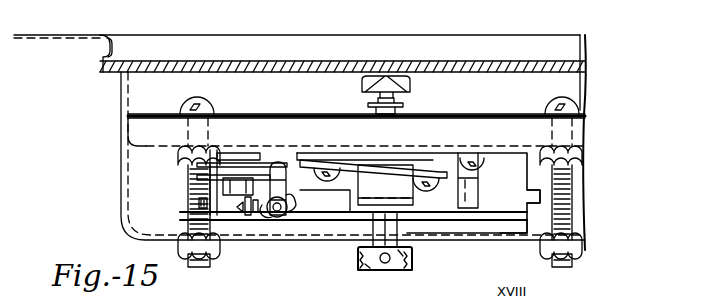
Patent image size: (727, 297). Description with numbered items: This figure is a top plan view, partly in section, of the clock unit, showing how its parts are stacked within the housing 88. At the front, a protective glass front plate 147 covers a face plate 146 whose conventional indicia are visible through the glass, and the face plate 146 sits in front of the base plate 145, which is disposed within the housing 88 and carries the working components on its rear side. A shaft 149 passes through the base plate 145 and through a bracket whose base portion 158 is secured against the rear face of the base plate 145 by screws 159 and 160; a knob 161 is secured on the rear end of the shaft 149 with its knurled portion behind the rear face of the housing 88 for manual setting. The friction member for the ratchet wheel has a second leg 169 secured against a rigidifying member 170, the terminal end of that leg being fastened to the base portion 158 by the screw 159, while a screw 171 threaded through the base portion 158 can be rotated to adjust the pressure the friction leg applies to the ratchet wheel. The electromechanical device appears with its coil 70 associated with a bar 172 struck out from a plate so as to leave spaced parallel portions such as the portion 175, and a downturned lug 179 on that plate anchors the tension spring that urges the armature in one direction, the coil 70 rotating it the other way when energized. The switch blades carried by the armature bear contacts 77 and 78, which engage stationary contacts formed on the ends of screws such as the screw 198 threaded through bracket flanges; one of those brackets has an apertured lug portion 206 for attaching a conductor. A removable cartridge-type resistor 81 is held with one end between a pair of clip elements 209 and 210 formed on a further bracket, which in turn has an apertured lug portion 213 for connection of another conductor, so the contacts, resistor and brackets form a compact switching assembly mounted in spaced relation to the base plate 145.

The protective glass front plate 147 is at (525, 60).
The face plate 146 is at (520, 114).
The base plate 145 is at (137, 156).
The base portion of bracket 158 is at (492, 148).
The housing 88 is at (121, 192).
The second leg 169 is at (378, 154).
The rigidifying member 170 is at (356, 155).
The screw 159 is at (322, 180).
The screw 171 is at (420, 186).
The screw 160 is at (484, 167).
The bar 172 is at (478, 194).
The coil 70 is at (422, 220).
The knob 161 is at (408, 268).
The shaft 149 is at (366, 224).
The parallel portion of plate 175 is at (514, 228).
The downturned lug 179 is at (537, 195).
The lug portion 213 is at (196, 170).
The lug portion 206 is at (198, 180).
The screw 198 is at (198, 206).
The contact 77 is at (239, 212).
The contact 78 is at (254, 216).
The resistor 81 is at (277, 218).
The clip element 209 is at (264, 217).
The clip element 210 is at (298, 212).